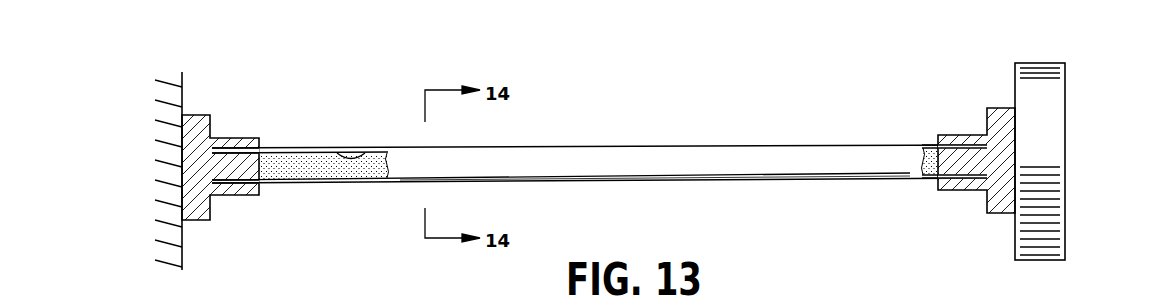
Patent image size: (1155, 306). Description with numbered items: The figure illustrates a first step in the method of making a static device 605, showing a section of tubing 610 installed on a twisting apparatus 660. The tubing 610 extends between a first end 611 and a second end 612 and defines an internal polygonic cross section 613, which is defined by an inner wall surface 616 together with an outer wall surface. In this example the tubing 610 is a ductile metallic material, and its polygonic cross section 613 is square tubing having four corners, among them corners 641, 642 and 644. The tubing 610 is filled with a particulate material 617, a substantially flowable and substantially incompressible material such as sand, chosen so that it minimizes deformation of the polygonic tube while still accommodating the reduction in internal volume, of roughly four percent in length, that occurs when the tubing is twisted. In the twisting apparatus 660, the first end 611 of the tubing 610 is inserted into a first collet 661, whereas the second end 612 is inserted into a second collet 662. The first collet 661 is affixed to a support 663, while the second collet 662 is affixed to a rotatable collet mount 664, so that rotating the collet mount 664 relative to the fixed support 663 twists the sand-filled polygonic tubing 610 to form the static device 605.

The static device 605 is at (358, 101).
The tubing 610 is at (599, 164).
The first end 611 is at (237, 140).
The second end 612 is at (962, 148).
The polygonic cross section 613 is at (725, 162).
The inner wall surface 616 is at (371, 151).
The particulate material 617 is at (353, 167).
The corner 641 is at (312, 148).
The corner 642 is at (318, 184).
The corner 644 is at (733, 301).
The twisting apparatus 660 is at (1064, 166).
The first collet 661 is at (218, 197).
The second collet 662 is at (980, 184).
The support 663 is at (172, 258).
The rotatable collet mount 664 is at (1039, 250).